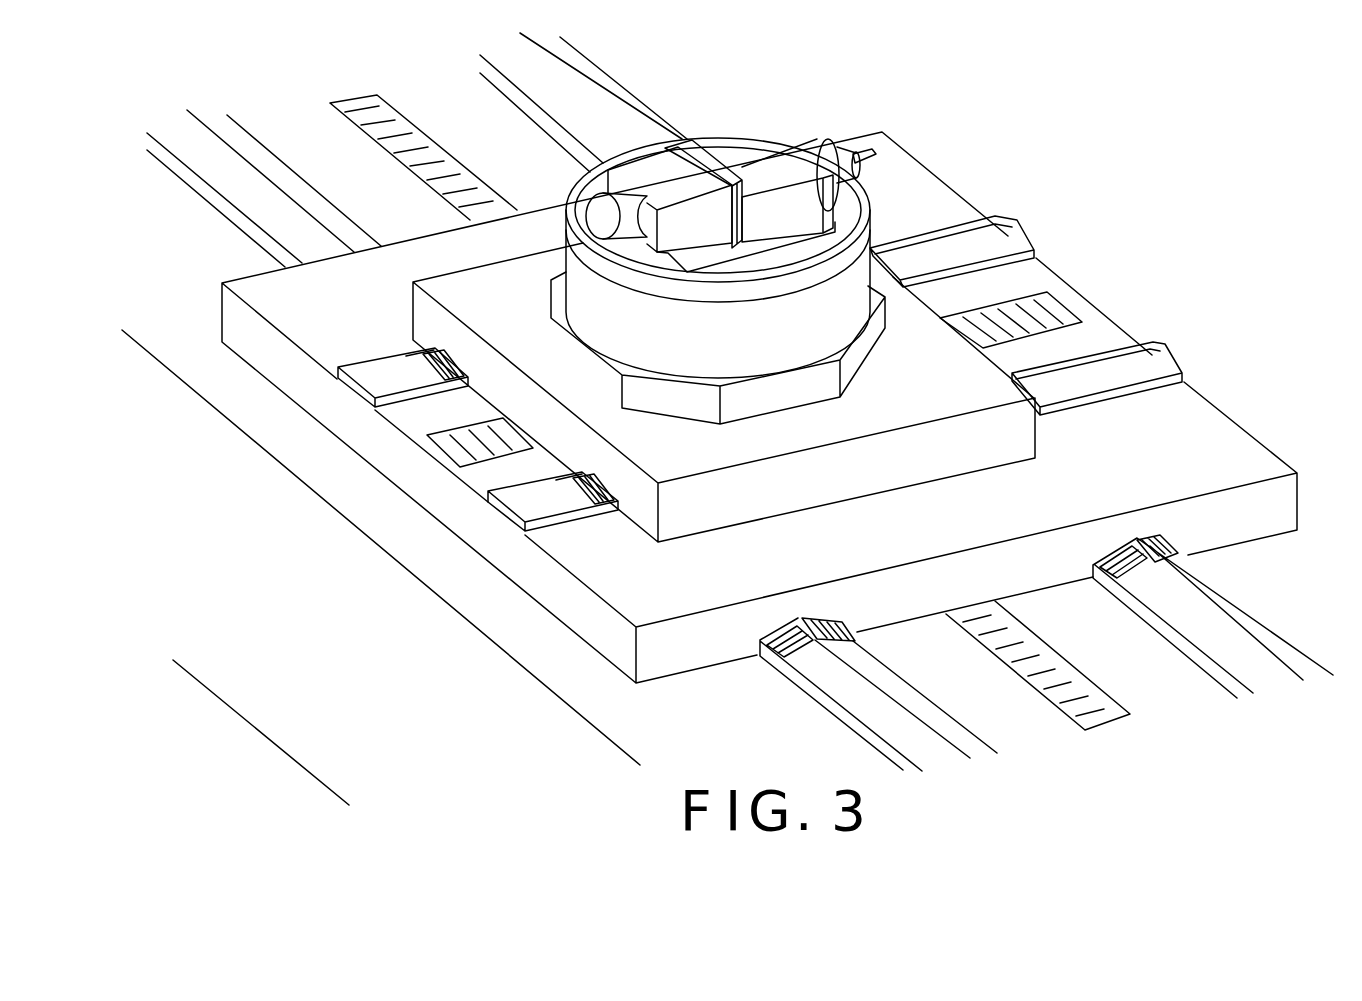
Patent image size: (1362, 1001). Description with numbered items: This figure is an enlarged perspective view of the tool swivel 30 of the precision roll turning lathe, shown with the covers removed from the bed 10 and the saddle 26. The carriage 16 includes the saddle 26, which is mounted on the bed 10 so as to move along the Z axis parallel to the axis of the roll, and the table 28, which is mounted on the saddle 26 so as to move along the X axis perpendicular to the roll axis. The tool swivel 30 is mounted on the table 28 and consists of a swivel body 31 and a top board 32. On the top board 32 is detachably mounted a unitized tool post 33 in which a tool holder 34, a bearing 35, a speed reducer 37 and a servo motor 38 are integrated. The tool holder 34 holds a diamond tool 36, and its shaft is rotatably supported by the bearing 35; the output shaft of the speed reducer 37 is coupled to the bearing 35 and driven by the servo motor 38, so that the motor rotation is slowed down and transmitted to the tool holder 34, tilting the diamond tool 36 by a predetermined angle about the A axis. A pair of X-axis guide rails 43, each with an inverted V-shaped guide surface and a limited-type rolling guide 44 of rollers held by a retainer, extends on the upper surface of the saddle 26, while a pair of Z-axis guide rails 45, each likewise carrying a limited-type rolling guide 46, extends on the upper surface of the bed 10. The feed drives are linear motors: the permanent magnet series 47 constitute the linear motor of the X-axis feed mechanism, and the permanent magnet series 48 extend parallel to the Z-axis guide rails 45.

The bed 10 is at (372, 518).
The carriage 16 is at (945, 155).
The saddle 26 is at (1198, 422).
The table 28 is at (1003, 437).
The tool swivel 30 is at (552, 233).
The swivel body 31 is at (840, 318).
The top board 32 is at (730, 297).
The tool post 33 is at (790, 122).
The tool holder 34 is at (835, 141).
The bearing 35 is at (745, 167).
The diamond tool 36 is at (873, 152).
The speed reducer 37 is at (652, 175).
The servo motor 38 is at (600, 214).
The X-axis guide rail 43 is at (388, 357).
The limited-type rolling guide 44 is at (460, 364).
The Z-axis guide rail 45 is at (882, 670).
The limited-type rolling guide 46 is at (783, 638).
The permanent magnet series 47 is at (500, 430).
The permanent magnet series 48 is at (1050, 657).